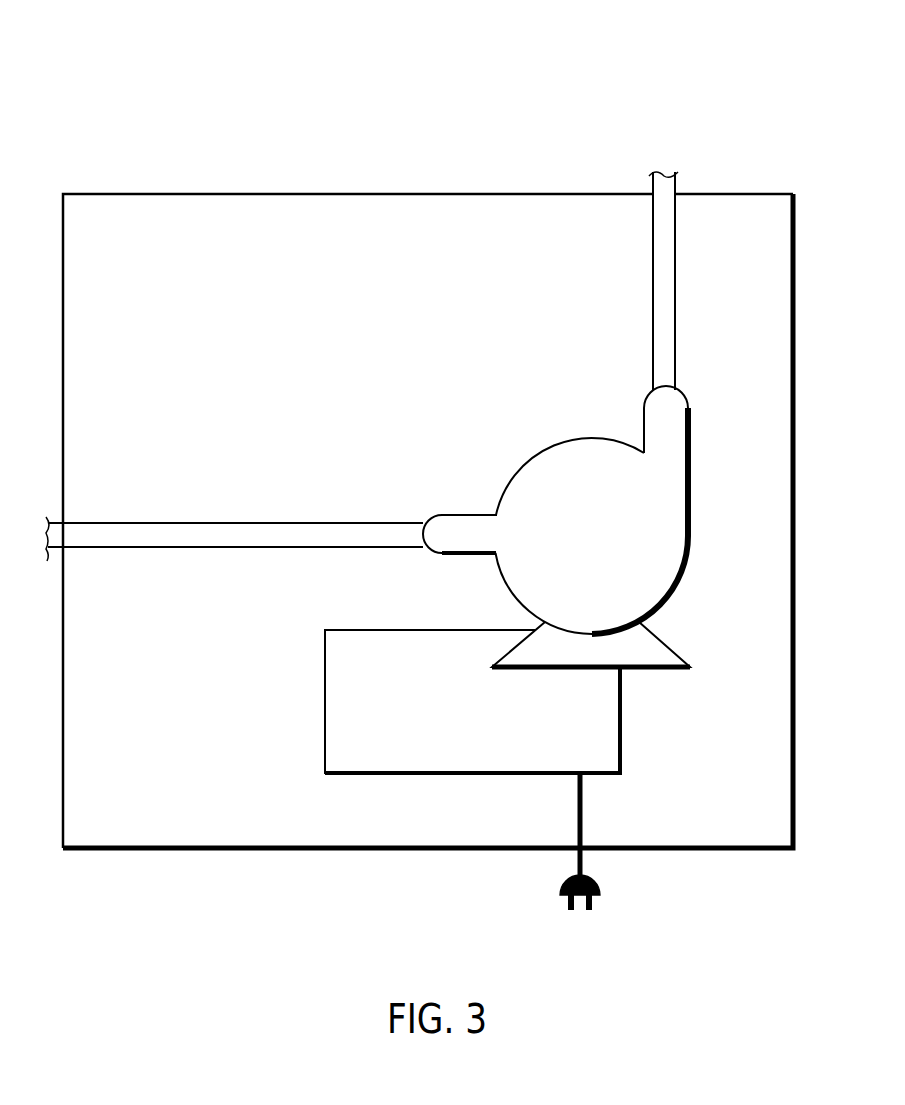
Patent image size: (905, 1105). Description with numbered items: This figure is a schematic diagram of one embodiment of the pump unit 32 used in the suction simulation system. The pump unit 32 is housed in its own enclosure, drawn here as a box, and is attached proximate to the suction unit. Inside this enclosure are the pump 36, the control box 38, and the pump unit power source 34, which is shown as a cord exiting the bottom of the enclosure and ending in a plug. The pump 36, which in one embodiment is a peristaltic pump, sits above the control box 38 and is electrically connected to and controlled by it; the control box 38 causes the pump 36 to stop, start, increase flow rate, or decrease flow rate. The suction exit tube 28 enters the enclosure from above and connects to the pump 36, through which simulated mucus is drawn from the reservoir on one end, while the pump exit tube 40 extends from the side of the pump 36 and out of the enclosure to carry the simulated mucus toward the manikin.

The pump unit 32 is at (122, 130).
The suction exit tube 28 is at (676, 190).
The pump 36 is at (692, 553).
The pump exit tube 40 is at (138, 550).
The control box 38 is at (452, 776).
The pump unit power source 34 is at (583, 810).